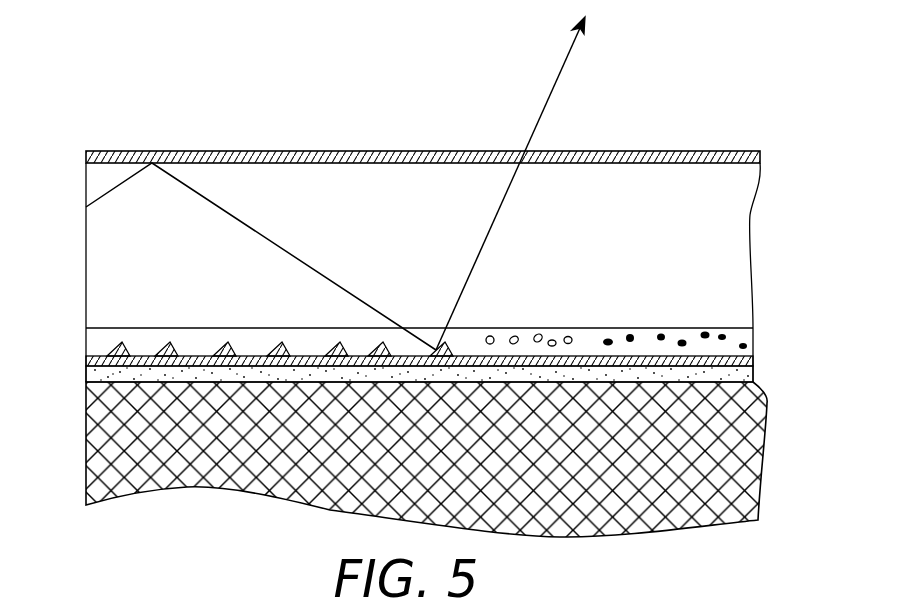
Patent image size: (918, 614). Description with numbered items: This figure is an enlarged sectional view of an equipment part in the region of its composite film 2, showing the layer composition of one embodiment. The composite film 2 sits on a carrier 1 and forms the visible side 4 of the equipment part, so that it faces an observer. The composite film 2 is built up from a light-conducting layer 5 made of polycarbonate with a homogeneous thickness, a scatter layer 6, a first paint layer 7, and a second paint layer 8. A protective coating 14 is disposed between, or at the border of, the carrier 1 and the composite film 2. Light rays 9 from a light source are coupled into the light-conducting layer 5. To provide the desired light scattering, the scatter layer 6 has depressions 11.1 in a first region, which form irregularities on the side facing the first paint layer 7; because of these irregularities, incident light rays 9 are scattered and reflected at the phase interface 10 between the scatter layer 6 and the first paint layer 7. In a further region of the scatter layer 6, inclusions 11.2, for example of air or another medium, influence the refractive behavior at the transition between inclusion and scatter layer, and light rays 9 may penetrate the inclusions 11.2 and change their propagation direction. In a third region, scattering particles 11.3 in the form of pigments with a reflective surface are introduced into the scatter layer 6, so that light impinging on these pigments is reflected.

The carrier 1 is at (198, 482).
The composite film 2 is at (70, 152).
The visible side 4 is at (283, 130).
The light-conducting layer 5 is at (744, 266).
The scatter layer 6 is at (753, 337).
The first paint layer 7 is at (755, 360).
The second paint layer 8 is at (760, 153).
The light rays 9 is at (549, 93).
The phase interface 10 is at (145, 355).
The depressions 11.1 is at (226, 344).
The inclusions 11.2 is at (490, 336).
The scattering particles 11.3 is at (632, 334).
The protective coating 14 is at (755, 378).